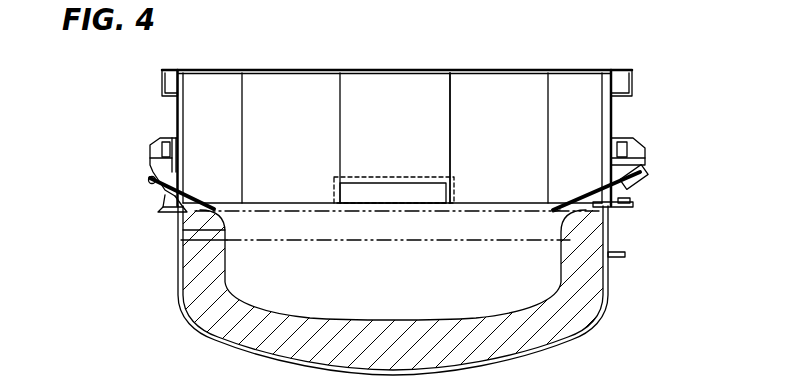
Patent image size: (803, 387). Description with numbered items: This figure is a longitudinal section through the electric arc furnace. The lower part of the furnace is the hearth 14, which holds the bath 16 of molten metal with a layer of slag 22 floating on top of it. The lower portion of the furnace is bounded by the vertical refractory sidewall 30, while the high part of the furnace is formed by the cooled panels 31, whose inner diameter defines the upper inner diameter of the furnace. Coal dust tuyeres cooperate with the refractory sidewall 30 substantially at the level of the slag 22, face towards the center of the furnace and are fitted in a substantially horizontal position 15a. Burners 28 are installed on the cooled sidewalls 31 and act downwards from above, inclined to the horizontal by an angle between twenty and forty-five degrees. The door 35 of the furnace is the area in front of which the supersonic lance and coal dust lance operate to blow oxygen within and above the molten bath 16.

The hearth 14 is at (585, 325).
The substantially horizontal position of coal dust tuyere 15a is at (185, 237).
The molten bath 16 is at (537, 240).
The slag 22 is at (462, 212).
The burners 28 is at (163, 188).
The refractory sidewall 30 is at (192, 291).
The cooled panels 31 is at (177, 113).
The door 35 is at (372, 193).